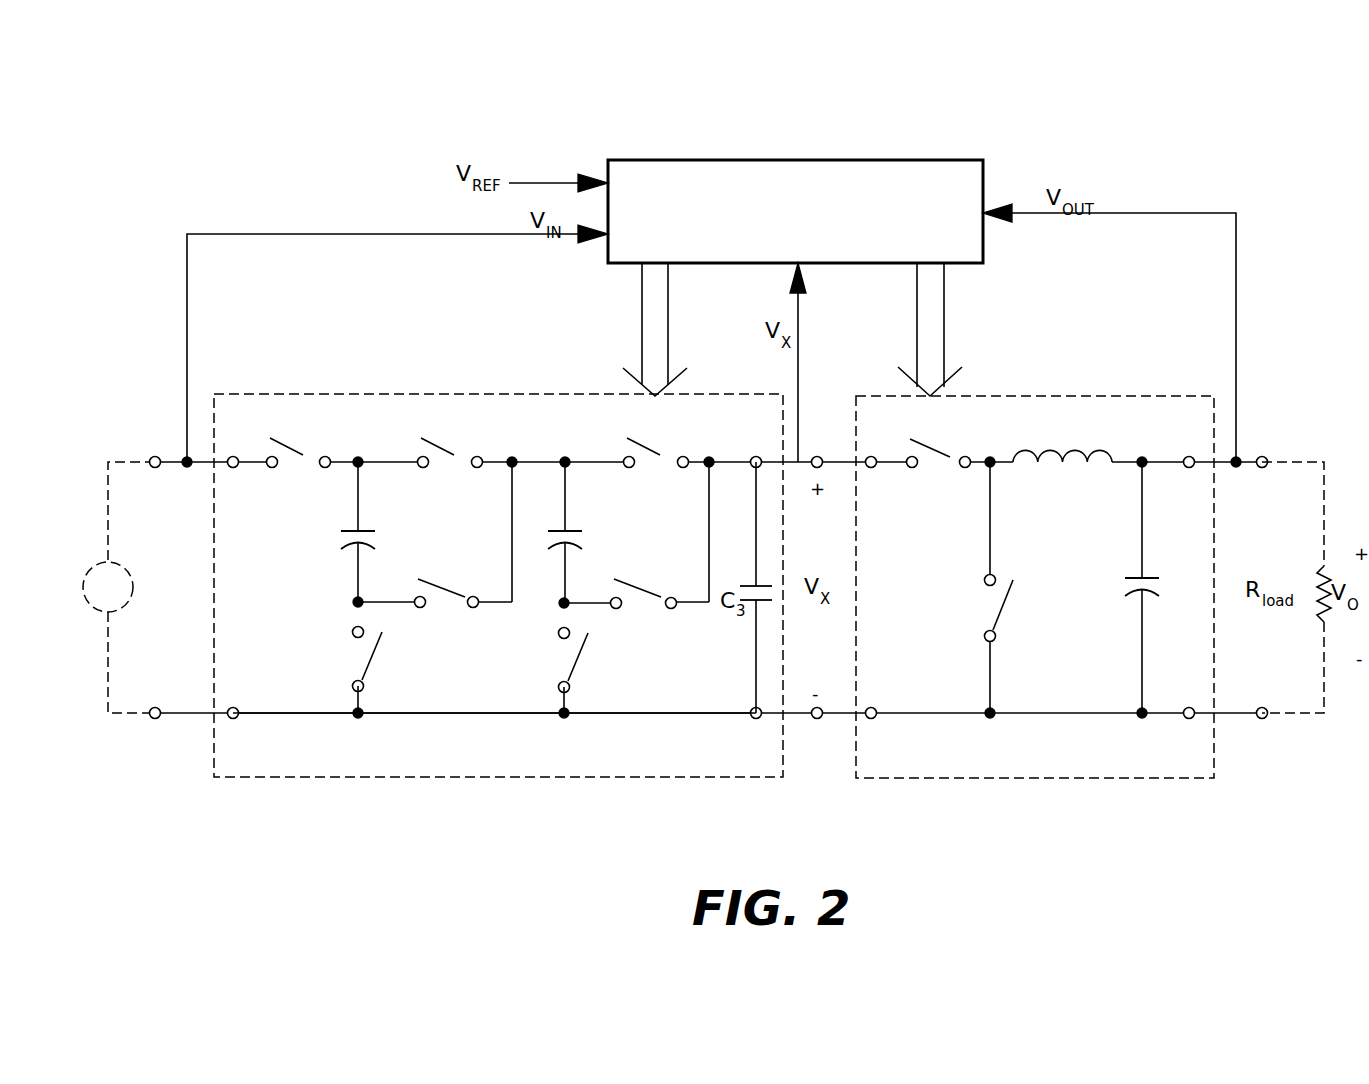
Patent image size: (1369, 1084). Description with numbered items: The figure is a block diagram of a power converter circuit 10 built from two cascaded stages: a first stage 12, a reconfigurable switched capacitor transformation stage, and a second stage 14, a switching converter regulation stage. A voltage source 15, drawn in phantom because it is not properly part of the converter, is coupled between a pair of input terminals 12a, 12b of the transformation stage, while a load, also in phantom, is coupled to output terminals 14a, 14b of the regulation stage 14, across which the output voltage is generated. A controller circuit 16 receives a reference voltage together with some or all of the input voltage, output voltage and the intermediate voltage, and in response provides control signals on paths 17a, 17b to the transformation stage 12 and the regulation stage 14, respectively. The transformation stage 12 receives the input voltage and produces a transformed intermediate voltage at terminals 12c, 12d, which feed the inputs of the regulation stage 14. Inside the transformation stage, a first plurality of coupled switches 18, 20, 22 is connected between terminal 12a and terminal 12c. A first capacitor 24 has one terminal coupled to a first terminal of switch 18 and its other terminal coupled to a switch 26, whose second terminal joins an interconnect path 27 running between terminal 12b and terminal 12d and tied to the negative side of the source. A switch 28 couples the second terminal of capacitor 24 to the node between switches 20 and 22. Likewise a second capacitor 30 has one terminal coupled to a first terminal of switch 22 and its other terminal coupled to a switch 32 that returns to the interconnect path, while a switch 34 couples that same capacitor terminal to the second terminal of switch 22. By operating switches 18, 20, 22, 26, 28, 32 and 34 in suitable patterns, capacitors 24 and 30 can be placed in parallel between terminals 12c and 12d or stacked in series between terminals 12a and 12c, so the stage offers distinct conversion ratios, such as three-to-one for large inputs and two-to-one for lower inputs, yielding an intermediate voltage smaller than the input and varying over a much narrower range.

The power converter circuit 10 is at (1247, 142).
The first stage 12 is at (287, 394).
The input terminal 12a is at (157, 456).
The input terminal 12b is at (157, 719).
The terminal 12c is at (817, 456).
The terminal 12d is at (817, 719).
The second stage 14 is at (1130, 396).
The output terminal 14a is at (1262, 456).
The output terminal 14b is at (1262, 719).
The voltage source 15 is at (88, 562).
The controller circuit 16 is at (795, 211).
The path 17a is at (641, 314).
The path 17b is at (945, 321).
The switch 18 is at (300, 466).
The switch 20 is at (452, 466).
The switch 22 is at (661, 466).
The first capacitor 24 is at (340, 540).
The switch 26 is at (360, 656).
The interconnect path 27 is at (447, 716).
The switch 28 is at (440, 603).
The second capacitor 30 is at (550, 540).
The switch 32 is at (556, 656).
The switch 34 is at (643, 604).